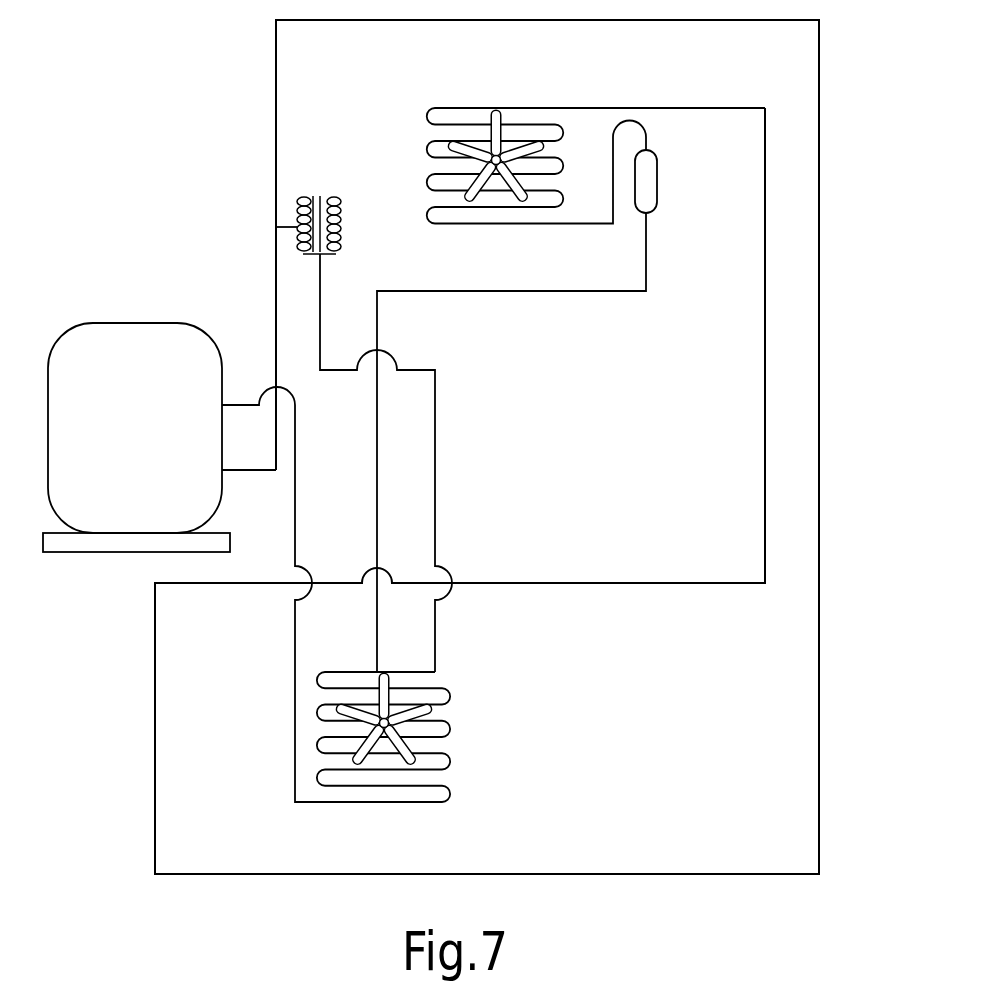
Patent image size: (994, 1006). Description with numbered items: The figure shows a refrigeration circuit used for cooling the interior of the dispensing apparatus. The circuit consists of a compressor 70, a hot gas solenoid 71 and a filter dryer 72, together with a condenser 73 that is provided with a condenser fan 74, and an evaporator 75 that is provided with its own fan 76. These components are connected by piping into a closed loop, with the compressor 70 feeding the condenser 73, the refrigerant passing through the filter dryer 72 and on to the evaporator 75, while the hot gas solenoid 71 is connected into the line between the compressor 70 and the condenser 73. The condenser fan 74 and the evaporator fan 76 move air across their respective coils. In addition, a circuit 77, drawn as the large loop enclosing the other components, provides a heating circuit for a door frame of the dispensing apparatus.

The compressor 70 is at (148, 447).
The hot gas solenoid 71 is at (340, 235).
The filter dryer 72 is at (647, 184).
The condenser 73 is at (507, 224).
The condenser fan 74 is at (496, 114).
The evaporator 75 is at (406, 802).
The fan 76 is at (428, 712).
The circuit 77 is at (820, 697).